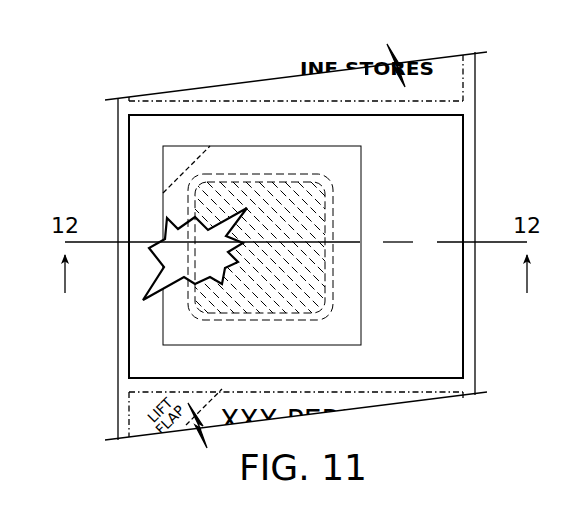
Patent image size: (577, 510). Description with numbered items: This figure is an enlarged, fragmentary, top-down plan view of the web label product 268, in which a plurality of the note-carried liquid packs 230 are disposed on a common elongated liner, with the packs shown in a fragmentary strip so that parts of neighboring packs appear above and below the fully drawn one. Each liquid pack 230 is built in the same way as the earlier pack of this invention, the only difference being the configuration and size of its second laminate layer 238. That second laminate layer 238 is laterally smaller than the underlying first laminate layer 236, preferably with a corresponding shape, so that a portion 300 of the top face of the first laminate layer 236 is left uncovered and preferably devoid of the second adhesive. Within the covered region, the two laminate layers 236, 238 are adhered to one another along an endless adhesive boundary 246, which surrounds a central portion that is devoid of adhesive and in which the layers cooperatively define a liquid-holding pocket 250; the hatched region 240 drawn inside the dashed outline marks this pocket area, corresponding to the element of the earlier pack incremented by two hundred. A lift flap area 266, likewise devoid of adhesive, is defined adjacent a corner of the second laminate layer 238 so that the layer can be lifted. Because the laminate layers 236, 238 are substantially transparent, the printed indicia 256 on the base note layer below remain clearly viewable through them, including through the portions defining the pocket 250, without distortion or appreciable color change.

The note-carried liquid pack 230 is at (485, 140).
The first laminate layer 236 is at (152, 312).
The second laminate layer 238 is at (173, 207).
The sample region 240 is at (292, 197).
The adhesive boundary 246 is at (337, 208).
The liquid-holding pocket 250 is at (247, 177).
The printed indicia 256 is at (424, 299).
The lift flap area 266 is at (188, 130).
The web label product 268 is at (128, 82).
The uncovered portion 300 is at (425, 203).